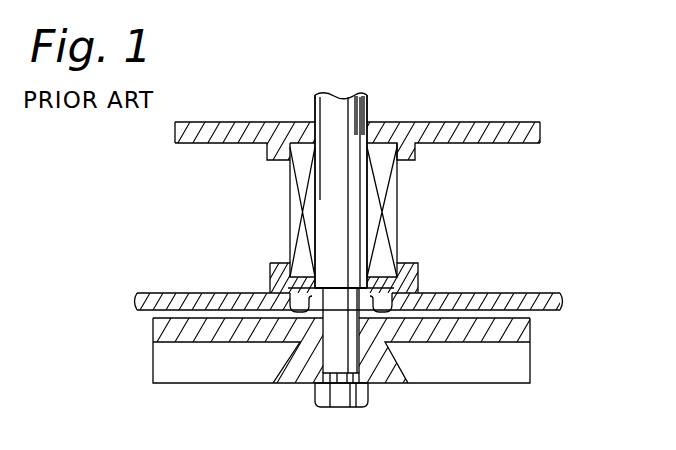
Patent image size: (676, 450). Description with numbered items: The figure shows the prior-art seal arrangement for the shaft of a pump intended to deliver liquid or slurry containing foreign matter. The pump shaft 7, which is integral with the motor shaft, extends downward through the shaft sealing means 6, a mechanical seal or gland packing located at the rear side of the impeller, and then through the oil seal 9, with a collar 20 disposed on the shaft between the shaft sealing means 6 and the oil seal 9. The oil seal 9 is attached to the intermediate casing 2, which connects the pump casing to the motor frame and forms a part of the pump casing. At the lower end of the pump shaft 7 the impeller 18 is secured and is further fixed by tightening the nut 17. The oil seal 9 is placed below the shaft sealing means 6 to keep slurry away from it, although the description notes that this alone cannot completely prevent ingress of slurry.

The intermediate casing 2 is at (530, 293).
The shaft sealing means 6 is at (397, 205).
The pump shaft 7 is at (367, 107).
The oil seal 9 is at (395, 286).
The nut 17 is at (317, 399).
The impeller 18 is at (230, 373).
The collar 20 is at (393, 275).